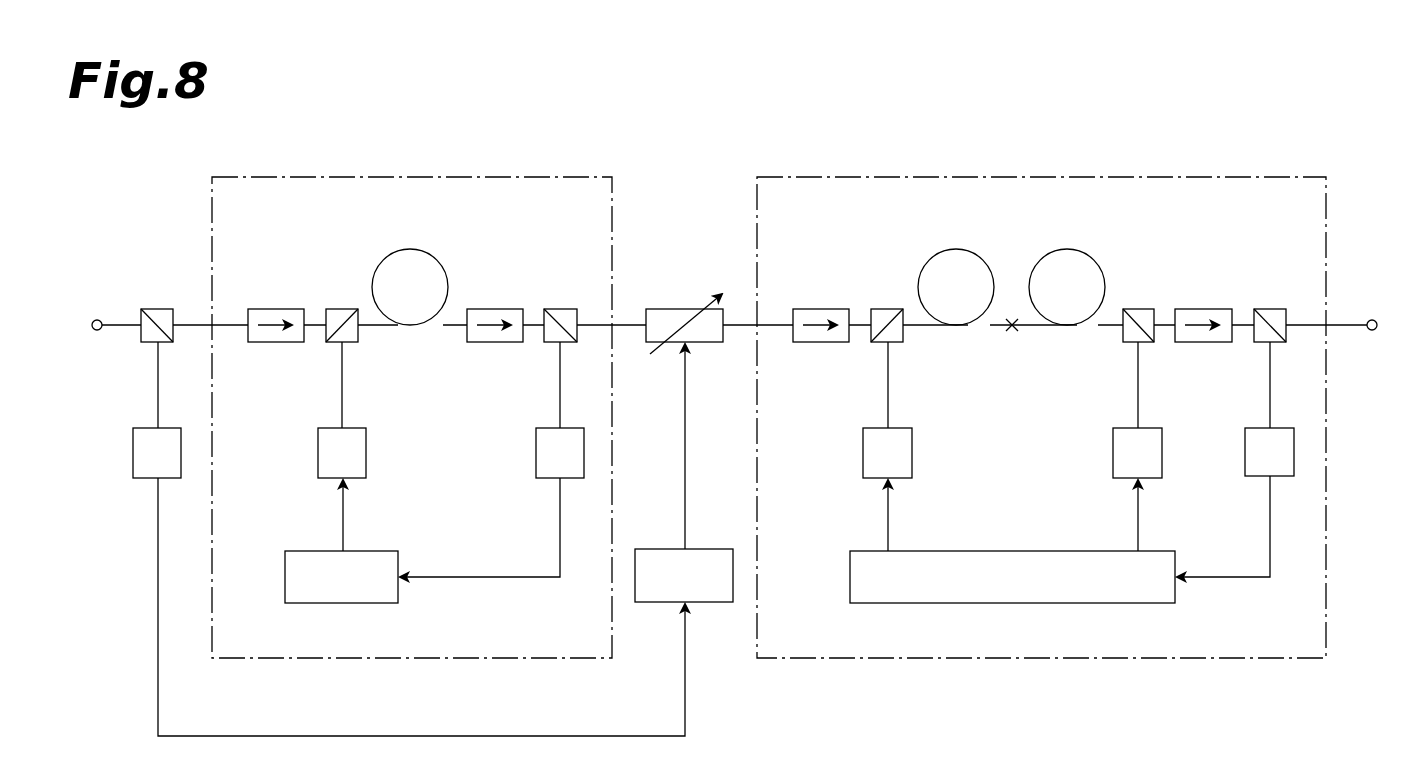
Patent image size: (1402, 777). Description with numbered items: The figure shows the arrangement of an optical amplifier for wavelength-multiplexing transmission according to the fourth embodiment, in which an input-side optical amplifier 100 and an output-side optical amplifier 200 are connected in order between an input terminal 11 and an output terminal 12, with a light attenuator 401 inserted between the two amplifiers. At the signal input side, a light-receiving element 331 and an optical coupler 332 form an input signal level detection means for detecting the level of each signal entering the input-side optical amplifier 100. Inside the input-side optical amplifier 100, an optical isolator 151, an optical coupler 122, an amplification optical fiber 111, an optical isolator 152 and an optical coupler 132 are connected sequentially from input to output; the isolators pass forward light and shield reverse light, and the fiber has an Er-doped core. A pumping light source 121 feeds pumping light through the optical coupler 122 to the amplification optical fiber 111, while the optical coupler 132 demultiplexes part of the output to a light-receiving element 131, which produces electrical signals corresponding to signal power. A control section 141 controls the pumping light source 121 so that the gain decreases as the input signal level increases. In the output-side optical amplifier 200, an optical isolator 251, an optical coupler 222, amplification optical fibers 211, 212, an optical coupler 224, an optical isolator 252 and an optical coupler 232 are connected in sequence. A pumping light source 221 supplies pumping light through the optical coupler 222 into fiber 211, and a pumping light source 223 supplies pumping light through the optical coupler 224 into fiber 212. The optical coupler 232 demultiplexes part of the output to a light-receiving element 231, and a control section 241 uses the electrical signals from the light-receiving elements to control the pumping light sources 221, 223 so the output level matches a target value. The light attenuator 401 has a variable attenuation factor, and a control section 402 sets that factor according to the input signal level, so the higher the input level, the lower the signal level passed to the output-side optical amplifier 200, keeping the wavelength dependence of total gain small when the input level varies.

The input terminal 11 is at (97, 319).
The output terminal 12 is at (1372, 319).
The input-side optical amplifier 100 is at (372, 178).
The output-side optical amplifier 200 is at (1025, 178).
The amplification optical fiber 111 is at (415, 250).
The pumping light source 121 is at (365, 479).
The optical coupler 122 is at (352, 343).
The light-receiving element 131 is at (545, 479).
The optical coupler 132 is at (548, 343).
The control section 141 is at (399, 560).
The optical isolator 151 is at (280, 308).
The optical isolator 152 is at (500, 308).
The amplification optical fiber 211 is at (960, 248).
The amplification optical fiber 212 is at (1070, 248).
The pumping light source 221 is at (905, 479).
The optical coupler 222 is at (898, 343).
The pumping light source 223 is at (1121, 479).
The optical coupler 224 is at (1131, 343).
The light-receiving element 231 is at (1252, 477).
The optical coupler 232 is at (1259, 343).
The control section 241 is at (989, 550).
The optical isolator 251 is at (825, 308).
The optical isolator 252 is at (1205, 308).
The light-receiving element 331 is at (140, 479).
The optical coupler 332 is at (150, 343).
The light attenuator 401 is at (668, 308).
The control section 402 is at (670, 603).